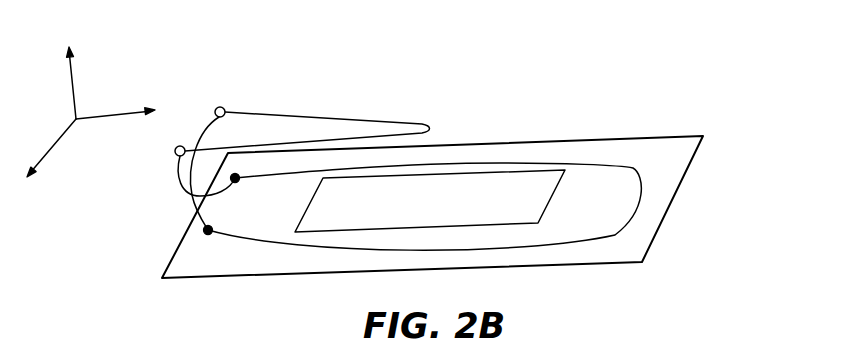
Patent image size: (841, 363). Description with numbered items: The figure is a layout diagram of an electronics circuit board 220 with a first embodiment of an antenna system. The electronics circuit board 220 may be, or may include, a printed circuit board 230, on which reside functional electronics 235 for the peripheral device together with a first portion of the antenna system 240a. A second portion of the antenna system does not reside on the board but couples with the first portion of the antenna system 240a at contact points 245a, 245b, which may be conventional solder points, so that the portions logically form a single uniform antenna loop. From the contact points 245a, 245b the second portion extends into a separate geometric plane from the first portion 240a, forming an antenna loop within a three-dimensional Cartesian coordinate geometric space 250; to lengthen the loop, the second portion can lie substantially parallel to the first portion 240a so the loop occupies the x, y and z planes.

The electronics circuit board 220 is at (667, 307).
The printed circuit board 230 is at (689, 173).
The functional electronics 235 is at (545, 187).
The first portion of the antenna system 240a is at (517, 163).
The contact point 245a is at (235, 178).
The contact point 245b is at (208, 230).
The three-dimensional Cartesian coordinate geometric space 250 is at (111, 75).